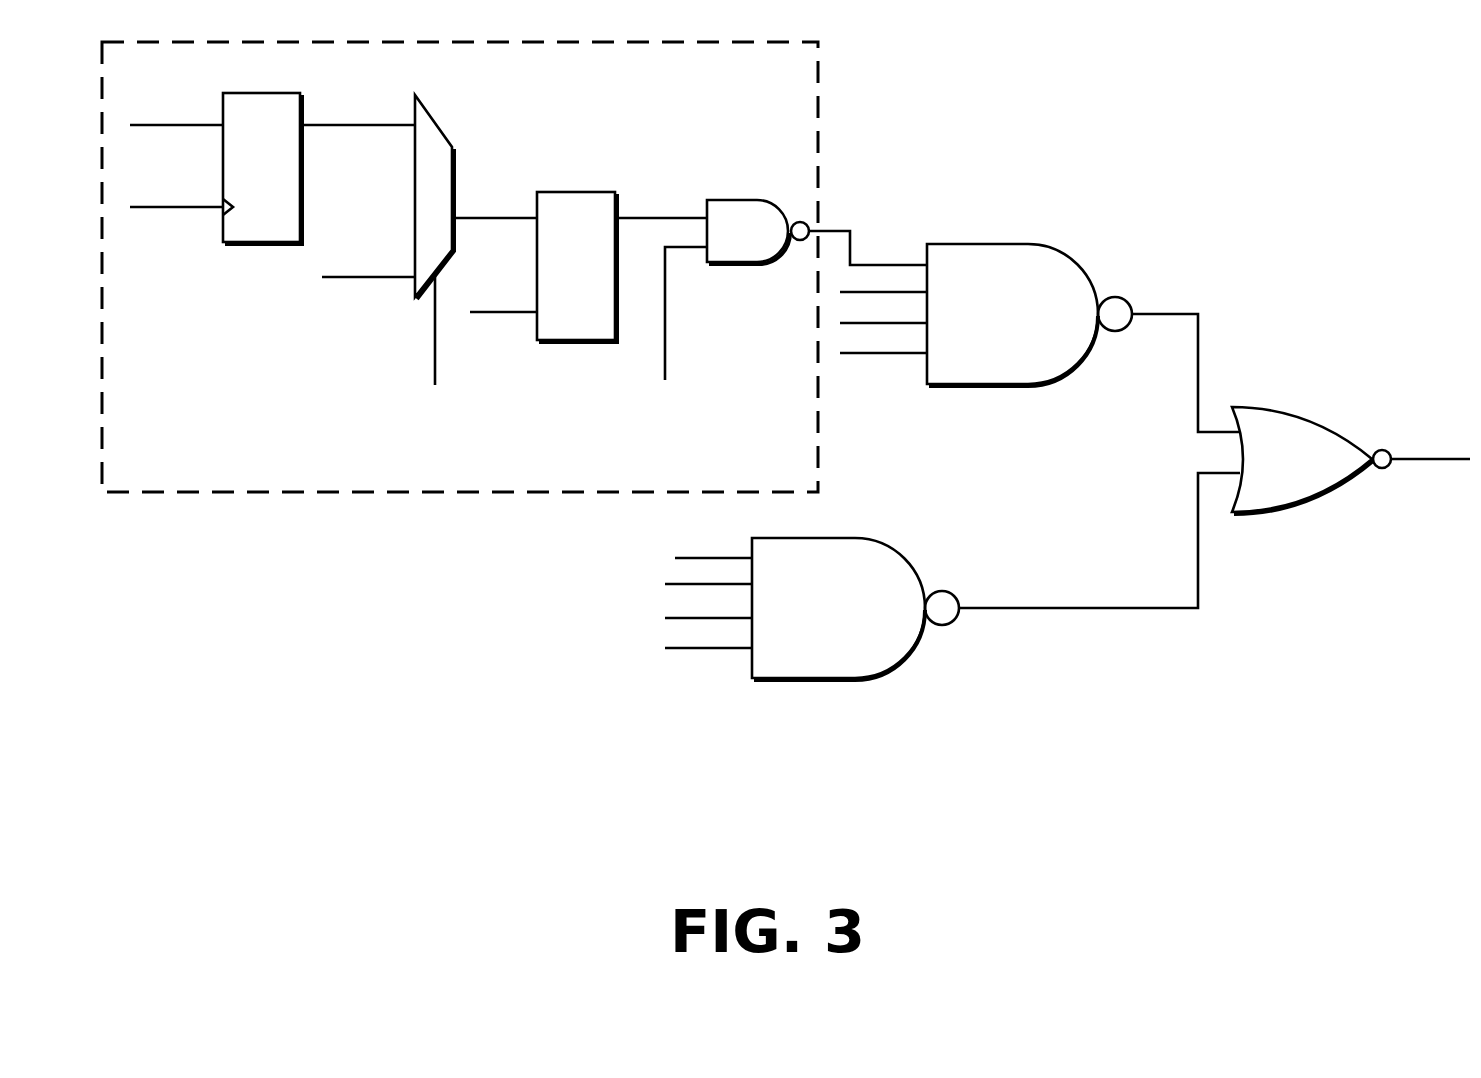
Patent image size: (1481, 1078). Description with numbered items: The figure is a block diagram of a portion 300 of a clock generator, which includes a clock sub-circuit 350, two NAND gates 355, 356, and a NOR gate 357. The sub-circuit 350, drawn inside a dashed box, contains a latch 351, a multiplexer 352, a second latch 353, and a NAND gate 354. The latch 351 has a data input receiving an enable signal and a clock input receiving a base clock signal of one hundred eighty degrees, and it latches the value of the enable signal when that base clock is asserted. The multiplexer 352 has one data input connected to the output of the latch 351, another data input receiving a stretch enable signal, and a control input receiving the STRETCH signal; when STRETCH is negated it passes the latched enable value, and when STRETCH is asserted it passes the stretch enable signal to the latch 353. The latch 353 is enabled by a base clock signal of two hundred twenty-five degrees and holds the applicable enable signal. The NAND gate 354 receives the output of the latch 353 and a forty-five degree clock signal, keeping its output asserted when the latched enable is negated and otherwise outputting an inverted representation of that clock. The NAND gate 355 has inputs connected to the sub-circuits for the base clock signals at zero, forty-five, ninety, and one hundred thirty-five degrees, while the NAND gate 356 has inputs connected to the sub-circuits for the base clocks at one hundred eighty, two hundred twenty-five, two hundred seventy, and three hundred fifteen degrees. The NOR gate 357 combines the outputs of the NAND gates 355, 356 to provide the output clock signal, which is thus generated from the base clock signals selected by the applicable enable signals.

The portion of the clock generator 300 is at (213, 680).
The clock sub-circuit 350 is at (213, 494).
The latch 351 is at (247, 245).
The multiplexer 352 is at (437, 103).
The latch 353 is at (570, 345).
The NAND gate 354 is at (746, 197).
The NAND gate 355 is at (978, 388).
The NAND gate 356 is at (805, 681).
The NOR gate 357 is at (1287, 516).